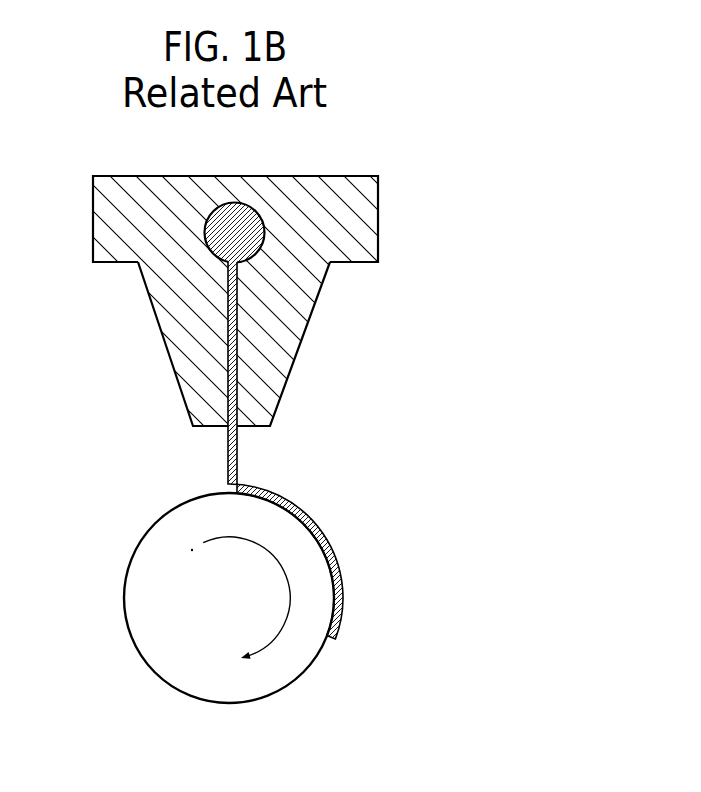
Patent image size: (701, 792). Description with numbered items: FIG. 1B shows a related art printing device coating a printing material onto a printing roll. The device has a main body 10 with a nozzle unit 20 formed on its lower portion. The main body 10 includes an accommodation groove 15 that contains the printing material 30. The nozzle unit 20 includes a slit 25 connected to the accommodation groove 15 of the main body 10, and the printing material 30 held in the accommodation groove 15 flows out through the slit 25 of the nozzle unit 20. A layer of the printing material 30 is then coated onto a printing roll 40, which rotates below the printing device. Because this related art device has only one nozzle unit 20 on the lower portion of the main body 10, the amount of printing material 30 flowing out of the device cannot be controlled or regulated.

The main body 10 is at (382, 218).
The accommodation groove 15 is at (247, 216).
The nozzle unit 20 is at (302, 350).
The slit 25 is at (225, 434).
The printing material 30 is at (238, 453).
The printing roll 40 is at (140, 630).